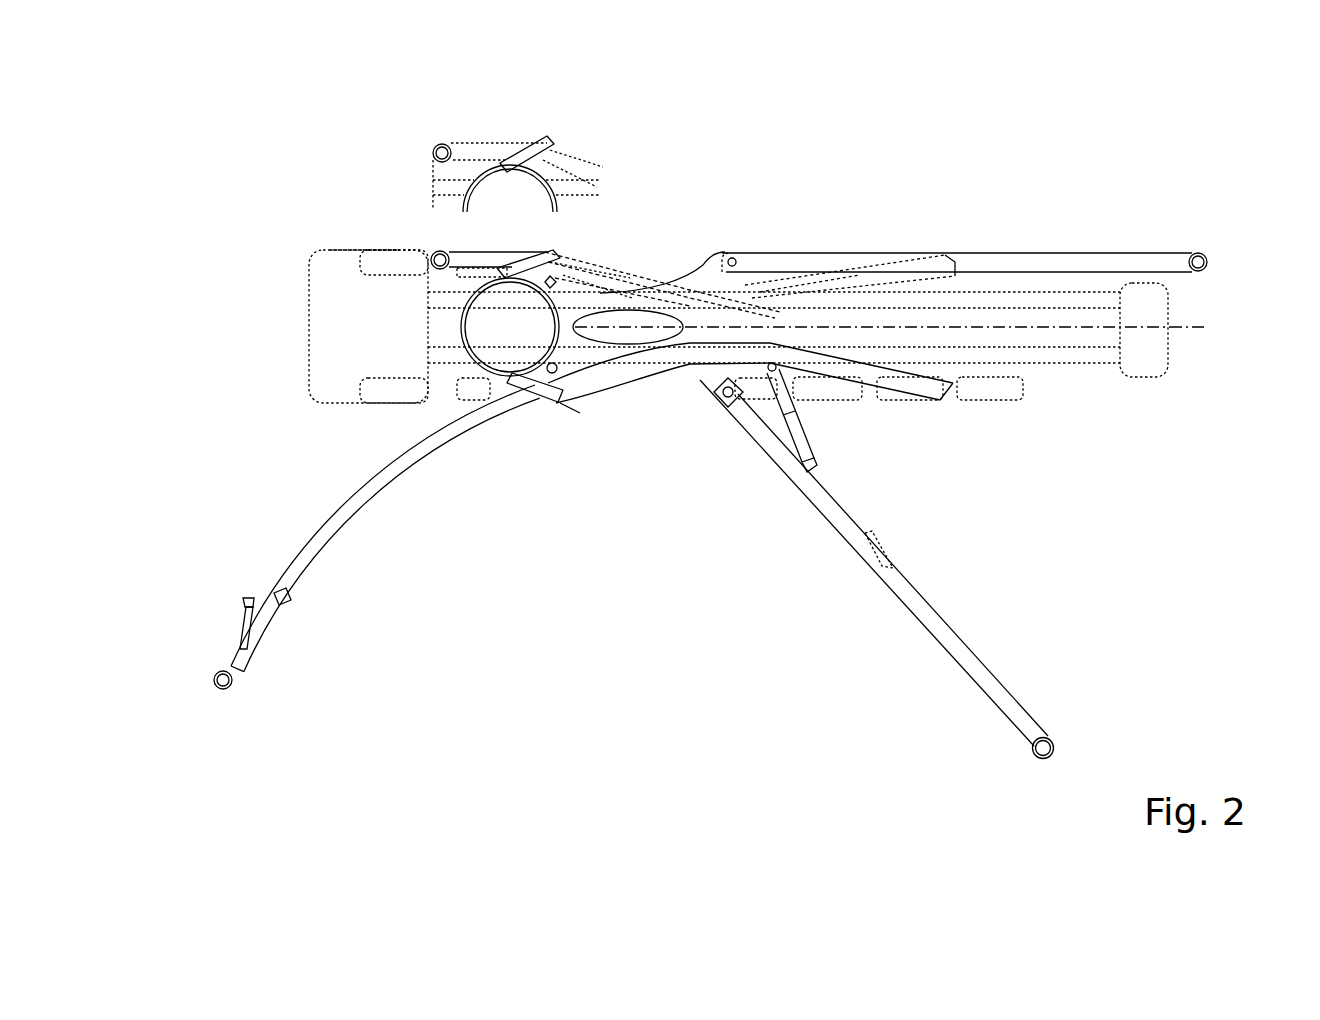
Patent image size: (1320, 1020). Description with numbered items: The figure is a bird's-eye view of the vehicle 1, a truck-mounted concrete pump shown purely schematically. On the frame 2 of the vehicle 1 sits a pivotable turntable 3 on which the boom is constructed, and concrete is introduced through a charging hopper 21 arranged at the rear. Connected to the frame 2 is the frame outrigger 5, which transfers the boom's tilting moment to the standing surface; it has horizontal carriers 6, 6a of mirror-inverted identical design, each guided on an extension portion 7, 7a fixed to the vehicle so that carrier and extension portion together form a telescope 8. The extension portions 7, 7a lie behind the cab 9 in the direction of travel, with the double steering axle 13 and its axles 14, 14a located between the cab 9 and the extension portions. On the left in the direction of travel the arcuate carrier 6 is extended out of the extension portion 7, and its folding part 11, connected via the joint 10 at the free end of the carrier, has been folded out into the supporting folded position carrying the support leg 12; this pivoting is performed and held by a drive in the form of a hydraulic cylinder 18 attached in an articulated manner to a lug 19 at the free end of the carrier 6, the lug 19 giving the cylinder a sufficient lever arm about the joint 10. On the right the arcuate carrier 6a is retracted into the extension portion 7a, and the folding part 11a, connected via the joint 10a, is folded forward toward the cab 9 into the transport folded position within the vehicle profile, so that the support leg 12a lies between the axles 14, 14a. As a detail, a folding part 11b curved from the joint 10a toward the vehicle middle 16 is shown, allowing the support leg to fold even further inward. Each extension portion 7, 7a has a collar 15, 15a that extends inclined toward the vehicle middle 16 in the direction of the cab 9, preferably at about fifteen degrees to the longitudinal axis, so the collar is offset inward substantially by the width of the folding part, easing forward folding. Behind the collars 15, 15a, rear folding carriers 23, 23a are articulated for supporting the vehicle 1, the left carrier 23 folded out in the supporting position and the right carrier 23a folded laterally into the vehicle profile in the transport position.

The vehicle 1 is at (205, 128).
The frame 2 is at (700, 325).
The turntable 3 is at (535, 323).
The frame outrigger 5 is at (724, 376).
The carrier 6 is at (346, 511).
The carrier 6a is at (742, 301).
The extension portion 7 is at (690, 364).
The extension portion 7a is at (855, 275).
The telescope 8 is at (565, 430).
The cab 9 is at (352, 330).
The joint 10 is at (282, 597).
The joint 10a is at (503, 263).
The folding part 11 is at (257, 651).
The folding part 11a is at (472, 250).
The folding part 11b is at (517, 137).
The support leg 12 is at (221, 691).
The support leg 12a is at (437, 143).
The double steering axle 13 is at (353, 242).
The axle 14 is at (385, 258).
The axle 14a is at (465, 388).
The collar 15 is at (534, 397).
The collar 15a is at (558, 246).
The vehicle middle 16 is at (1188, 320).
The hydraulic cylinder 18 is at (240, 624).
The lug 19 is at (247, 592).
The charging hopper 21 is at (1148, 355).
The rear folding carrier 23 is at (965, 653).
The rear folding carrier 23a is at (1000, 256).